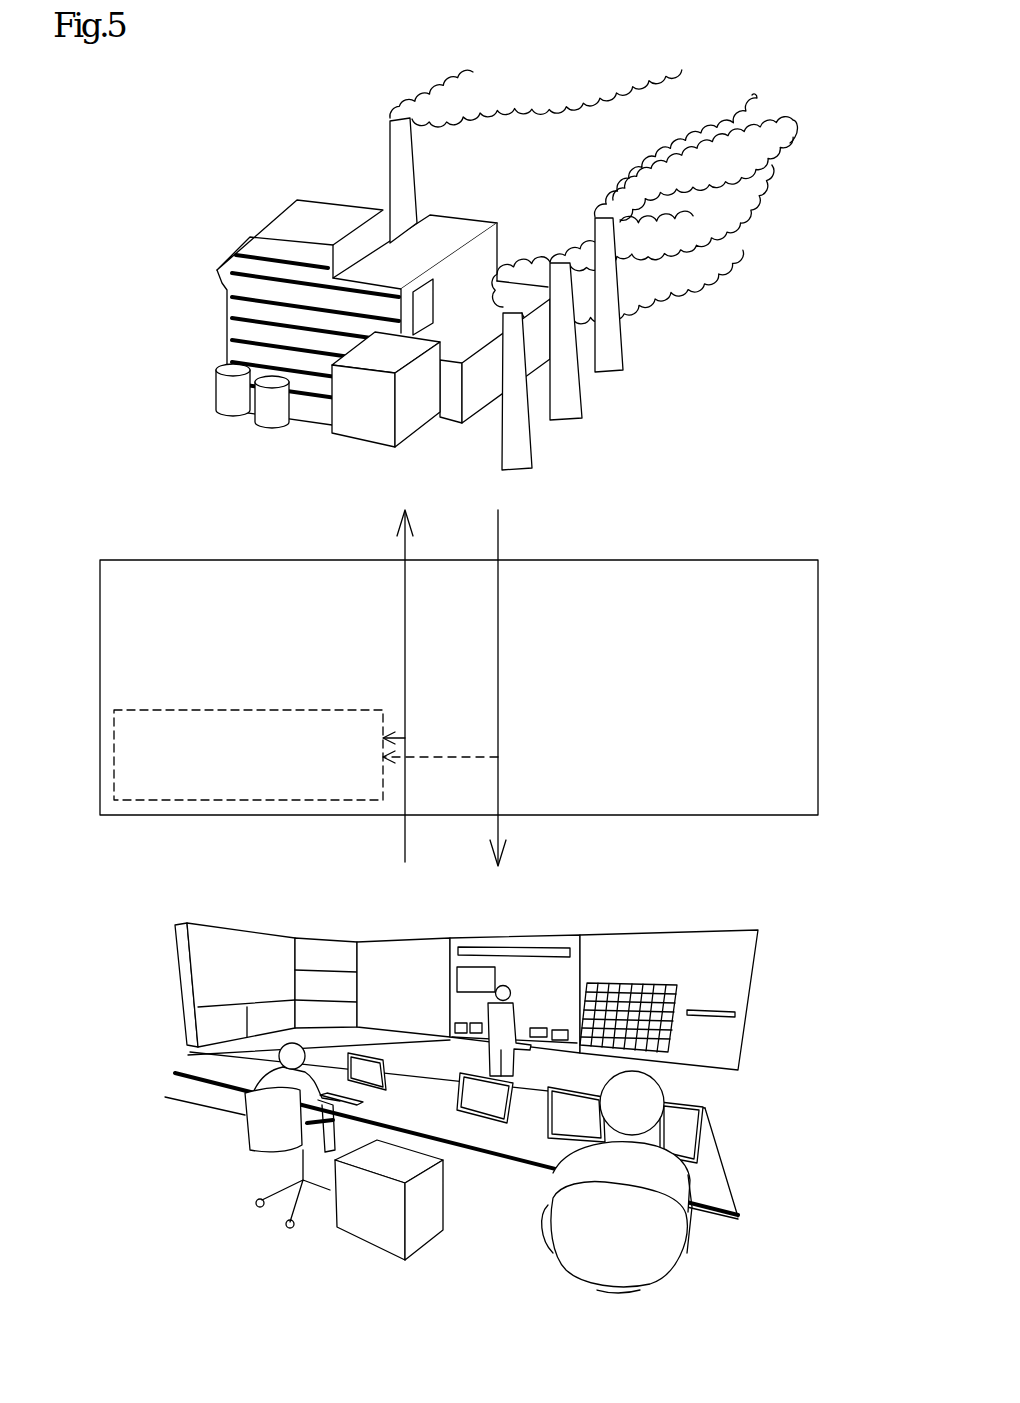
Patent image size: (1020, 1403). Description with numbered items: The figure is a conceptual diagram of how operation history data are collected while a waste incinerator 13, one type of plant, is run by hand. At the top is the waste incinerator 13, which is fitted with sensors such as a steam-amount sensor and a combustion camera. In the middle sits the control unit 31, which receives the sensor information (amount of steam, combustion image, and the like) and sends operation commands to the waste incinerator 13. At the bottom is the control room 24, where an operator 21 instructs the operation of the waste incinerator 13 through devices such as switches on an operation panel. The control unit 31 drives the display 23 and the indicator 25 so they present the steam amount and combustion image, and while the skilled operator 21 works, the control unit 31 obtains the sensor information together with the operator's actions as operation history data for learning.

The waste incinerator 13 is at (193, 304).
The control unit 31 is at (548, 559).
The control room 24 is at (148, 912).
The display 23 is at (333, 950).
The operator 21 is at (522, 998).
The indicator 25 is at (548, 1025).